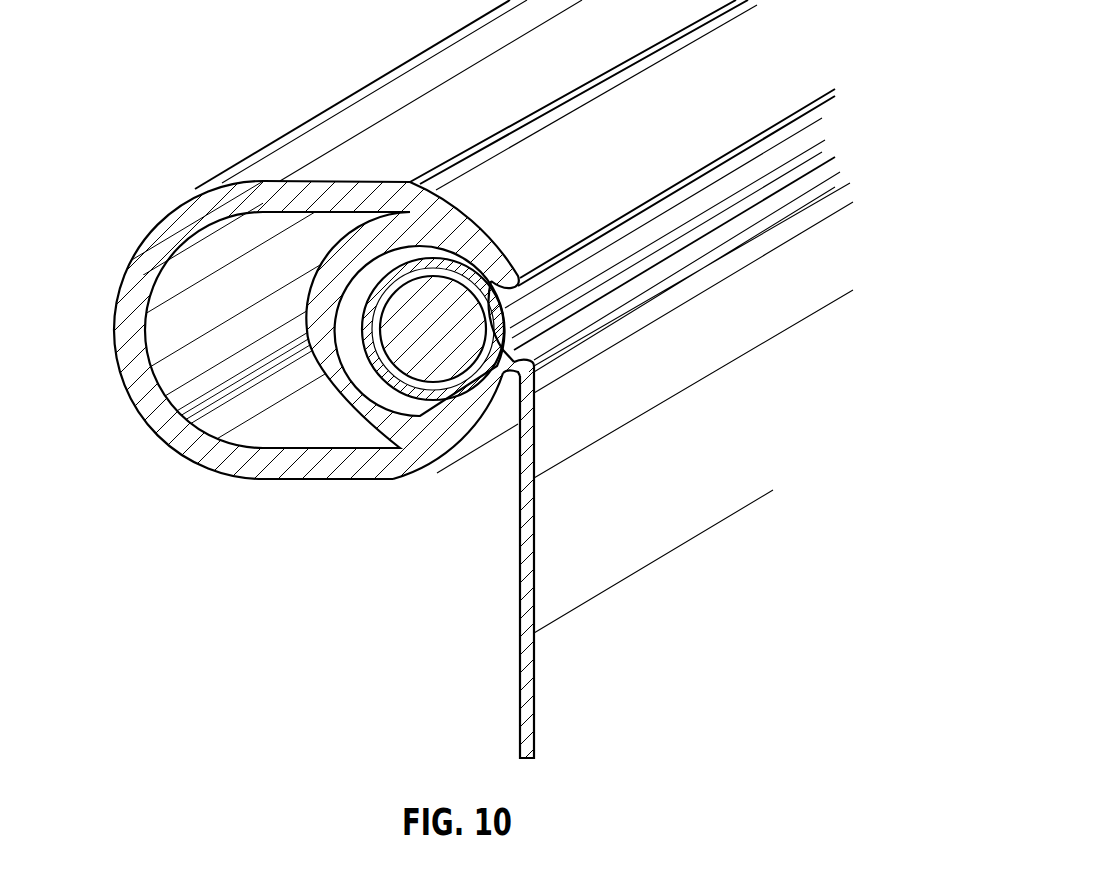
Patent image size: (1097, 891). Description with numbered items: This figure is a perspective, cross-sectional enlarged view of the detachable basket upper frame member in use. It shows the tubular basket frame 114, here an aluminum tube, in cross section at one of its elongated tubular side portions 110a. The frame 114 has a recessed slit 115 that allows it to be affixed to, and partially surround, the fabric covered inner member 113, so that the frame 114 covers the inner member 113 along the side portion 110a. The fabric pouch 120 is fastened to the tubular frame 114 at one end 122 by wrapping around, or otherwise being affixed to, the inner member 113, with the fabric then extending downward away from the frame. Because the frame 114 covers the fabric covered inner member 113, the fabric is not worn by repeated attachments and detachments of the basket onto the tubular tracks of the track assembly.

The elongated tubular side portion 110a is at (294, 422).
The tubular basket frame 114 is at (181, 322).
The inner member 113 is at (443, 313).
The recessed slit 115 is at (388, 417).
The fabric pouch 120 is at (550, 600).
The end of fabric pouch 122 is at (536, 358).